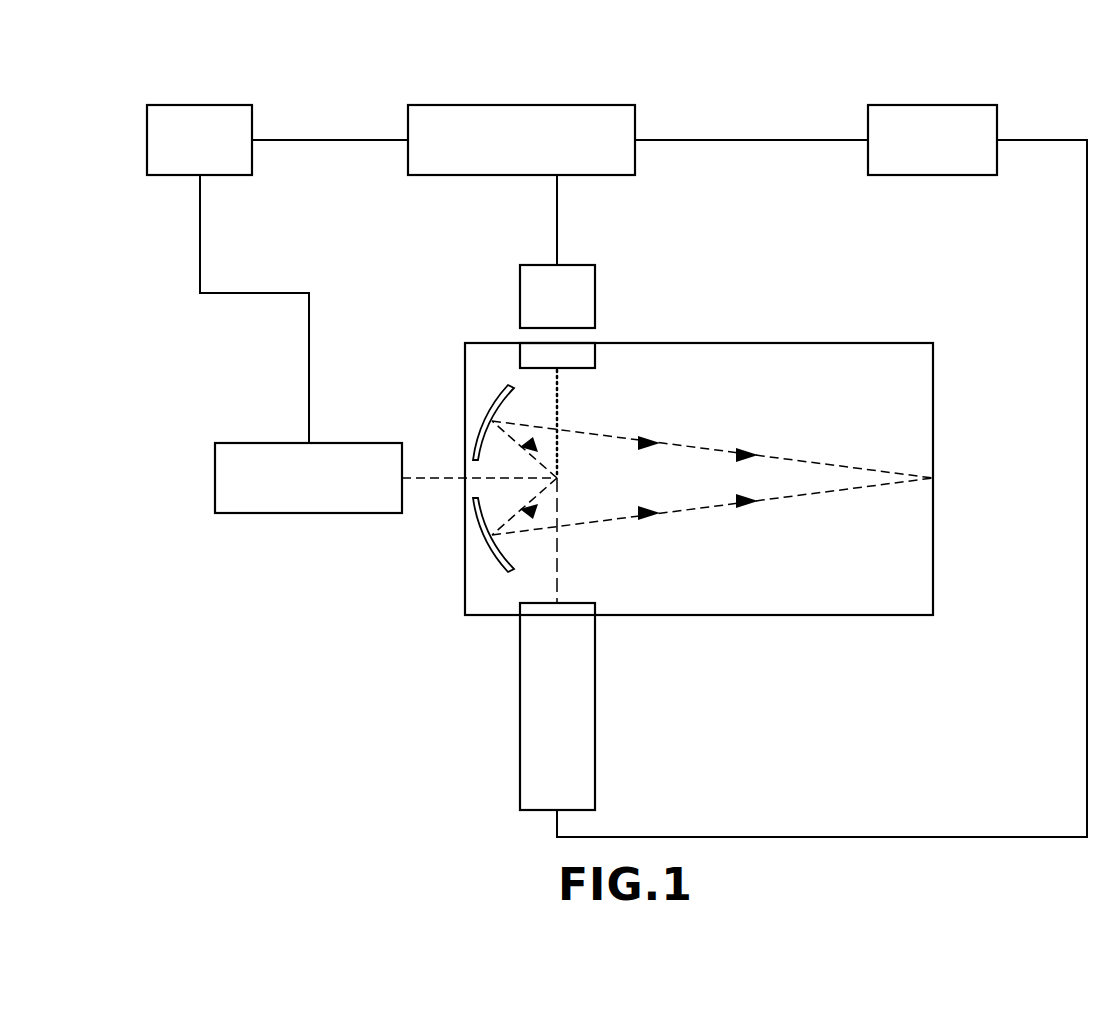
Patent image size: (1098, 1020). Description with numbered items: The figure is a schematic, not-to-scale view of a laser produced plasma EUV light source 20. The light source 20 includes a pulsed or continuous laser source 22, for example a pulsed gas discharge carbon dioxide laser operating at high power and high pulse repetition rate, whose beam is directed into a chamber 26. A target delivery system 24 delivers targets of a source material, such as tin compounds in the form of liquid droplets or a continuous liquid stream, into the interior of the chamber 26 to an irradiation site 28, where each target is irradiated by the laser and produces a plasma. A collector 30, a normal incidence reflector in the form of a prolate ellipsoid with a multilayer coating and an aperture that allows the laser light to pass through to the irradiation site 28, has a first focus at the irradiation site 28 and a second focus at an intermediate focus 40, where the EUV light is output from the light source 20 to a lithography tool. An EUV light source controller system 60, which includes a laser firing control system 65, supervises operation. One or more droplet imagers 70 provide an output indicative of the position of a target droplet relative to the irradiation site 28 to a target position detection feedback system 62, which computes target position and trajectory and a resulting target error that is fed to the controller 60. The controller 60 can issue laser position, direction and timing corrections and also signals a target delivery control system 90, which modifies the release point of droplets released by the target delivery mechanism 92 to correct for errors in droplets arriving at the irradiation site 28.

The laser produced plasma EUV light source 20 is at (372, 636).
The laser source 22 is at (277, 513).
The target delivery system 24 is at (652, 296).
The chamber 26 is at (905, 595).
The irradiation site 28 is at (560, 478).
The collector 30 is at (497, 399).
The intermediate focus 40 is at (890, 472).
The EUV light source controller system 60 is at (524, 105).
The target position detection feedback system 62 is at (918, 105).
The laser firing control system 65 is at (196, 105).
The droplet imager 70 is at (595, 715).
The target delivery control system 90 is at (520, 291).
The target delivery mechanism 92 is at (595, 358).